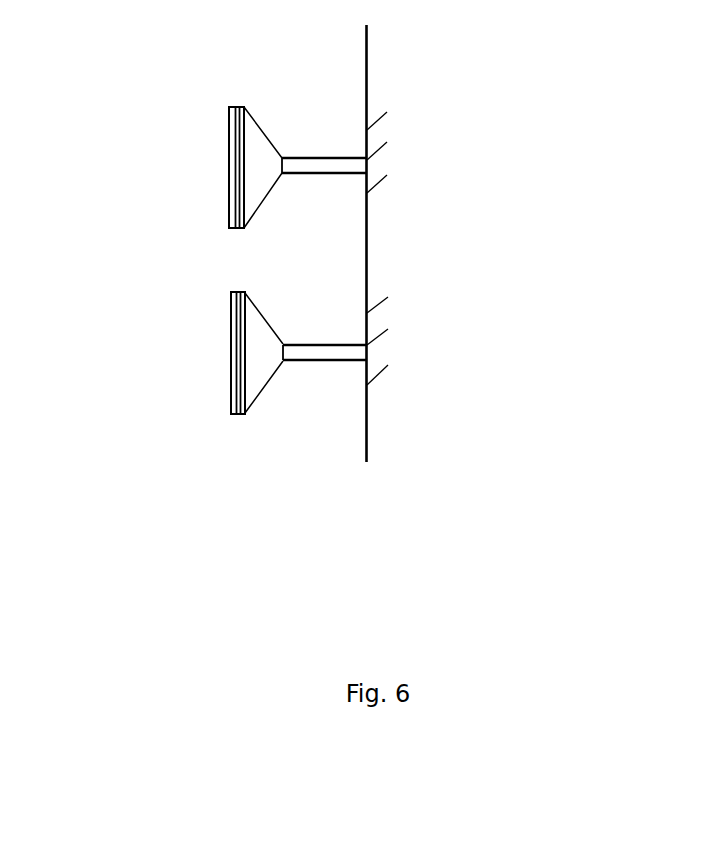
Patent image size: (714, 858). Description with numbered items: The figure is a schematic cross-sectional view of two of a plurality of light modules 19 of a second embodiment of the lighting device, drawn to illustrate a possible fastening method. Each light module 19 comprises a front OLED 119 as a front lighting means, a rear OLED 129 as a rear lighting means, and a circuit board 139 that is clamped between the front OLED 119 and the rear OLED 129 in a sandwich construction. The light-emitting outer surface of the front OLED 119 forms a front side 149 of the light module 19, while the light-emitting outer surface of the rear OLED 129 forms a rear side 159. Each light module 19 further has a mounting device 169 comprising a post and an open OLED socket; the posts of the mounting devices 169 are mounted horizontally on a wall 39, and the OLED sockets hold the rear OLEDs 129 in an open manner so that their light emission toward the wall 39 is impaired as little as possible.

The light module 19 is at (235, 441).
The wall 39 is at (377, 173).
The front OLED 119 is at (231, 415).
The rear OLED 129 is at (245, 415).
The circuit board 139 is at (239, 121).
The front side 149 is at (231, 318).
The rear side 159 is at (243, 122).
The mounting device 169 is at (321, 353).